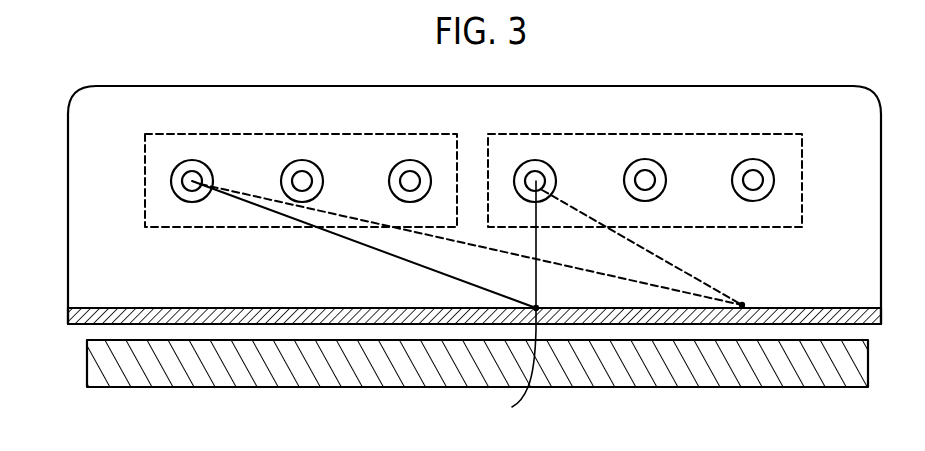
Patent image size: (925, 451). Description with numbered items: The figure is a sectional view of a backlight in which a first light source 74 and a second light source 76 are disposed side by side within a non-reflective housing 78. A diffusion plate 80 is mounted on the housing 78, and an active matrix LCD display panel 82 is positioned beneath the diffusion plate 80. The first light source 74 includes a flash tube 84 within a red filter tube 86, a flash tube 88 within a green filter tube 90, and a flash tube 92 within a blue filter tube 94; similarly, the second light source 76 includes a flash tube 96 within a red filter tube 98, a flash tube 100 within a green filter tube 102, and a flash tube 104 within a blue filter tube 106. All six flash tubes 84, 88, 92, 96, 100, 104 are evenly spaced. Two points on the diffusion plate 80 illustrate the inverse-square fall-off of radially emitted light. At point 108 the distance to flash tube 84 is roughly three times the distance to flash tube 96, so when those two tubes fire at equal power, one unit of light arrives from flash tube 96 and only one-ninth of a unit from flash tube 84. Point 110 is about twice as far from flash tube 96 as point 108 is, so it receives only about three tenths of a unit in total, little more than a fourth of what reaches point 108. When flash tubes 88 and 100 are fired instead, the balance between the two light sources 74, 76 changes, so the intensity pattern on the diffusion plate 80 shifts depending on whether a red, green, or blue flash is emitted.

The first light source 74 is at (207, 134).
The second light source 76 is at (712, 134).
The non-reflective housing 78 is at (68, 176).
The diffusion plate 80 is at (146, 308).
The active matrix LCD display panel 82 is at (87, 366).
The flash tube 84 is at (200, 179).
The red filter tube 86 is at (186, 203).
The flash tube 88 is at (312, 186).
The green filter tube 90 is at (318, 170).
The flash tube 92 is at (410, 180).
The blue filter tube 94 is at (424, 170).
The flash tube 96 is at (534, 178).
The red filter tube 98 is at (552, 164).
The flash tube 100 is at (645, 176).
The green filter tube 102 is at (665, 174).
The flash tube 104 is at (765, 182).
The blue filter tube 106 is at (772, 170).
The point 108 is at (508, 300).
The point 110 is at (742, 305).